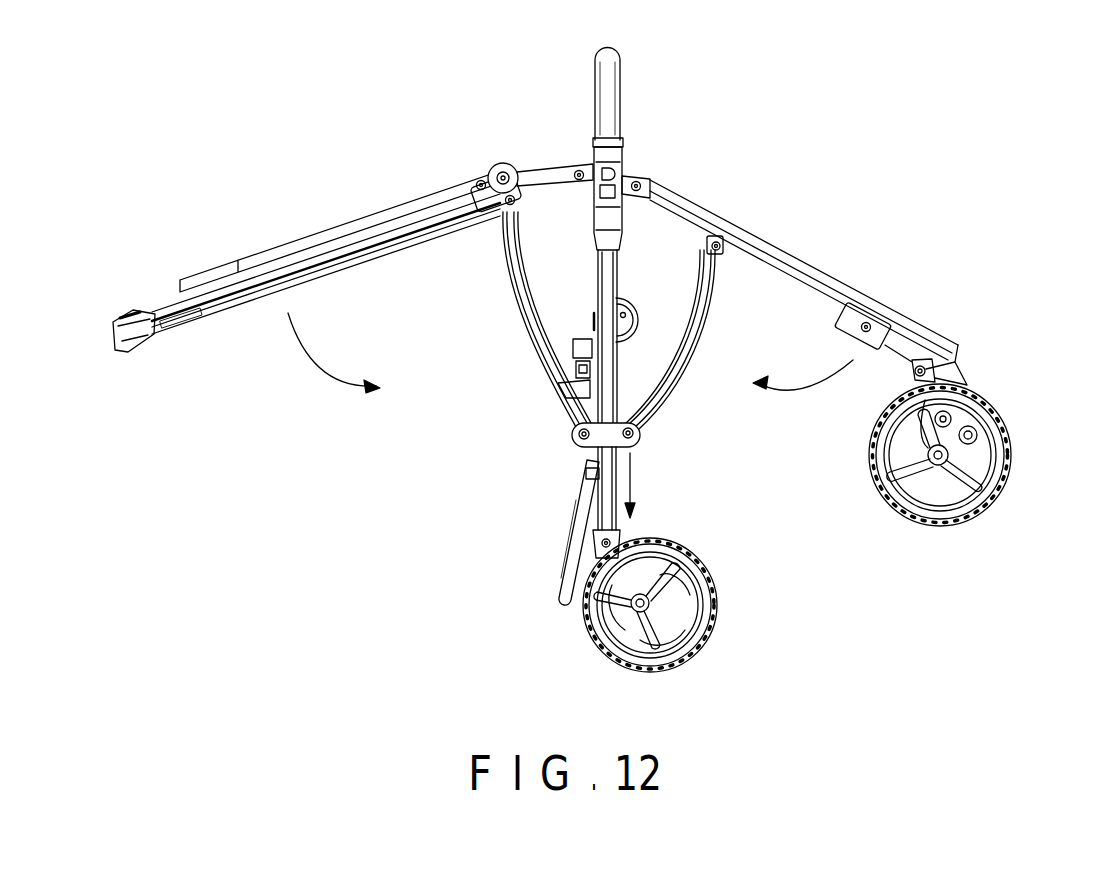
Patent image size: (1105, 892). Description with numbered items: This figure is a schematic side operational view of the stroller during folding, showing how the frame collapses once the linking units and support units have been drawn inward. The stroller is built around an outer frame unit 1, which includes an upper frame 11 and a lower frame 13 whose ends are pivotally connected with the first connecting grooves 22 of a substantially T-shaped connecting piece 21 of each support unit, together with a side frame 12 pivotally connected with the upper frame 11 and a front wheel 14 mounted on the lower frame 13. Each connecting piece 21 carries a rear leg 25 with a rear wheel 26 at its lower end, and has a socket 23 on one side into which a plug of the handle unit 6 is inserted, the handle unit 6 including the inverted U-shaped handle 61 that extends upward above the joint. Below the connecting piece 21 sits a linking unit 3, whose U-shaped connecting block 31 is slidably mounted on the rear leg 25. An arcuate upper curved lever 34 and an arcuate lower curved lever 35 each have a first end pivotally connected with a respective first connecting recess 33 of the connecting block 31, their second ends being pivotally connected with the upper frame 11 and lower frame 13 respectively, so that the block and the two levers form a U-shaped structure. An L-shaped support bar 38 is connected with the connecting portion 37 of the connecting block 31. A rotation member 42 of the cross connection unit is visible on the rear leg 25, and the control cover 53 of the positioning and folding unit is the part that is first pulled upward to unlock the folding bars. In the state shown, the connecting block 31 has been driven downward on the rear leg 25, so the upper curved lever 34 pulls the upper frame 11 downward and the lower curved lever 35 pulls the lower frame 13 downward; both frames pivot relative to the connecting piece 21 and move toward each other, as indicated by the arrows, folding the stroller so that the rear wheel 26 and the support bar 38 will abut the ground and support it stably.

The outer frame unit 1 is at (593, 357).
The linking unit 3 is at (556, 442).
The handle unit 6 is at (692, 233).
The upper frame 11 is at (286, 274).
The side frame 12 is at (355, 230).
The lower frame 13 is at (806, 268).
The front wheel 14 is at (990, 410).
The connecting piece 21 is at (616, 262).
The first connecting groove 22 is at (577, 169).
The socket 23 is at (553, 173).
The rear leg 25 is at (602, 203).
The rear wheel 26 is at (718, 599).
The connecting block 31 is at (603, 442).
The first connecting recess 33 is at (575, 432).
The upper curved lever 34 is at (520, 333).
The lower curved lever 35 is at (670, 407).
The connecting portion 37 is at (585, 473).
The support bar 38 is at (573, 547).
The rotation member 42 is at (637, 318).
The control cover 53 is at (580, 340).
The handle 61 is at (612, 90).